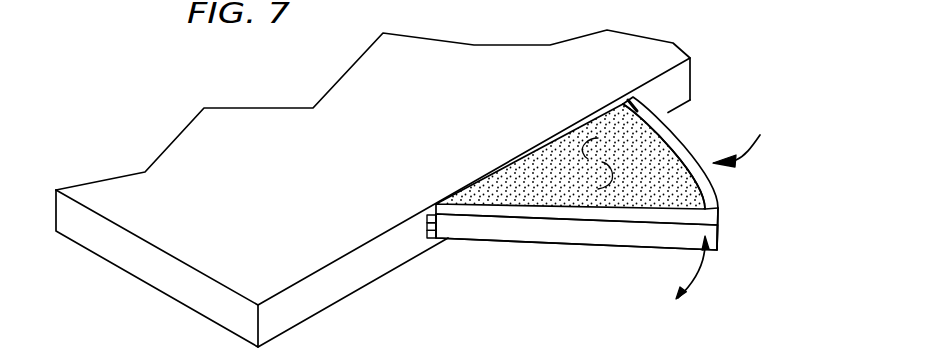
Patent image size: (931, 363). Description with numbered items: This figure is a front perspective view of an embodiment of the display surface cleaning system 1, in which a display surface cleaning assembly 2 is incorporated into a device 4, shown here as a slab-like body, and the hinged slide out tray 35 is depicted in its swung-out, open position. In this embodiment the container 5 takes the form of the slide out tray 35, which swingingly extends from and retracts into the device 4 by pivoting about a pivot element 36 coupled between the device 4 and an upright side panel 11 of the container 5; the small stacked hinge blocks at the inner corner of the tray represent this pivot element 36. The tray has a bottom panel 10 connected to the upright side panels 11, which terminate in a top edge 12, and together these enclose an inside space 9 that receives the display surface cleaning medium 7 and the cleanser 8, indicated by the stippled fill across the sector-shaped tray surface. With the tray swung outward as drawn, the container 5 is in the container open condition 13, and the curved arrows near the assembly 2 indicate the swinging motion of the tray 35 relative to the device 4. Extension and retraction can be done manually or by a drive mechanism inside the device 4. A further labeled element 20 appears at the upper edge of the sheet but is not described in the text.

The display surface cleaning system 1 is at (447, 196).
The display surface cleaning assembly 2 is at (724, 206).
The device 4 is at (347, 280).
The container 5 is at (777, 244).
The display surface cleaning medium 7 is at (591, 149).
The cleanser 8 is at (655, 152).
The inside space 9 is at (597, 163).
The bottom panel 10 is at (635, 249).
The upright side panel 11 is at (719, 213).
The top edge 12 is at (707, 189).
The container open condition 13 is at (717, 229).
The upper component 20 is at (692, 4).
The slide out tray 35 is at (719, 232).
The pivot element 36 is at (436, 237).